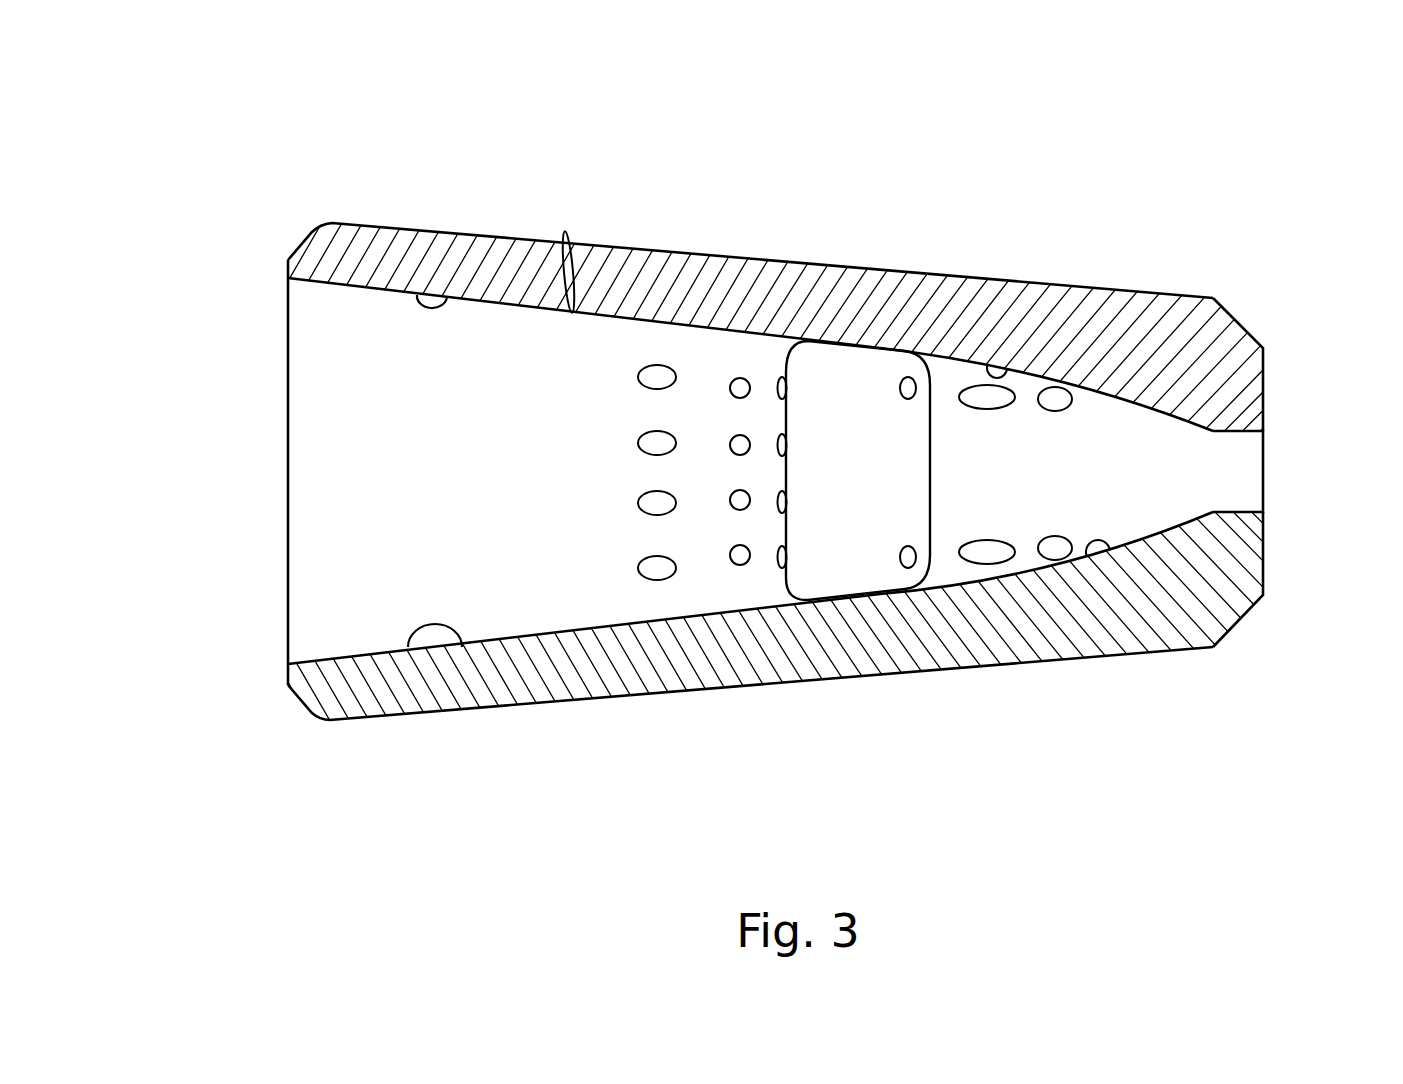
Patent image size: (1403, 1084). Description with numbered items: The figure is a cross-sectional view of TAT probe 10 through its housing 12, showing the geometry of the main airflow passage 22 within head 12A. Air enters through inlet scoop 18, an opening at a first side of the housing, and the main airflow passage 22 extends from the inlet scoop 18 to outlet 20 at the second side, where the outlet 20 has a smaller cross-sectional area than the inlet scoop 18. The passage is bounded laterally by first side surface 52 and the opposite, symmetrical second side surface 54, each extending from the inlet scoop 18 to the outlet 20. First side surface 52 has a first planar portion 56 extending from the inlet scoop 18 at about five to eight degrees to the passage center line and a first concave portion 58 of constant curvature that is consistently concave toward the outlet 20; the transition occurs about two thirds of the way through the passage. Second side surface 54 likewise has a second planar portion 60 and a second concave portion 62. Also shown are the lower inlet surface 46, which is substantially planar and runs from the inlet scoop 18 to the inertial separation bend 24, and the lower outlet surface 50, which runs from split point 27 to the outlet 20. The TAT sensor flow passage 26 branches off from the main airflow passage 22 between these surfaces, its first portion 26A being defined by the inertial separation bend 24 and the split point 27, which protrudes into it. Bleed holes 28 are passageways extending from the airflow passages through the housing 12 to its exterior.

The TAT probe 10 is at (217, 125).
The housing 12 is at (302, 227).
The head 12A is at (1135, 320).
The inlet scoop 18 is at (343, 513).
The outlet 20 is at (1240, 470).
The main airflow passage 22 is at (591, 428).
The inertial separation bend 24 is at (786, 483).
The TAT sensor flow passage 26 is at (889, 496).
The first portion of TAT sensor flow passage 26A is at (847, 417).
The split point 27 is at (940, 547).
The bleed holes 28 is at (905, 563).
The lower inlet surface 46 is at (402, 432).
The lower outlet surface 50 is at (1121, 473).
The first side surface 52 is at (693, 335).
The second side surface 54 is at (699, 612).
The first planar portion 56 is at (417, 295).
The first concave portion 58 is at (1013, 370).
The second planar portion 60 is at (462, 647).
The second concave portion 62 is at (1110, 543).